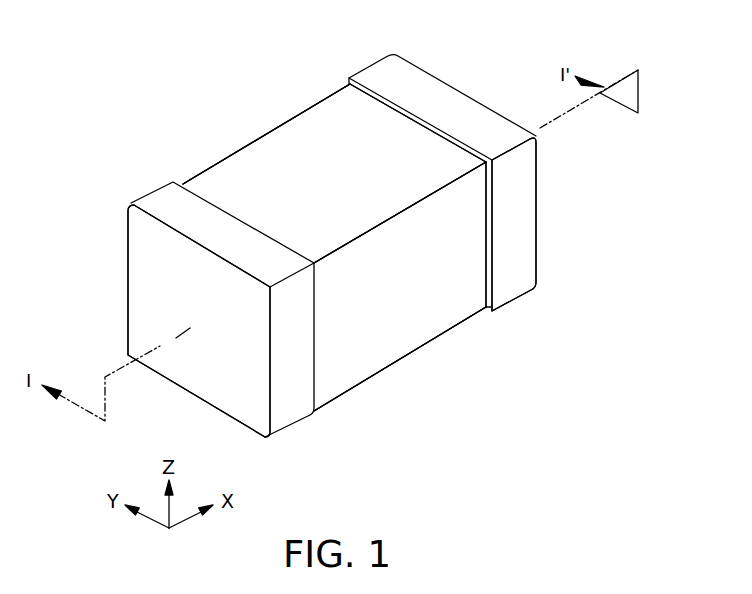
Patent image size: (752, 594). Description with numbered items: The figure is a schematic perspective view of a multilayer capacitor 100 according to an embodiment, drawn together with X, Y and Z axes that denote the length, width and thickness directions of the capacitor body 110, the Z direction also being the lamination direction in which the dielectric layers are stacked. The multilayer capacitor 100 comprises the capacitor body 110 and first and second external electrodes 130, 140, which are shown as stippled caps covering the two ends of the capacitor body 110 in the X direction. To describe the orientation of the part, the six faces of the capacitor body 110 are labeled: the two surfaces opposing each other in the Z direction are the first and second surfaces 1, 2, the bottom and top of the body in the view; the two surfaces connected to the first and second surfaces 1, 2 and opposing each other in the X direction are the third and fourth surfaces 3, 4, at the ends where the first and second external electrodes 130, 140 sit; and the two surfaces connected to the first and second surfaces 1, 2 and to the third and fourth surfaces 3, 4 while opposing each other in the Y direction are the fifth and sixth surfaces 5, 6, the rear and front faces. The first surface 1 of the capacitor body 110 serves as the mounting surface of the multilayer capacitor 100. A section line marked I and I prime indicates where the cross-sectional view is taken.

The multilayer capacitor 100 is at (185, 34).
The capacitor body 110 is at (407, 140).
The first external electrode 130 is at (131, 272).
The second external electrode 140 is at (528, 241).
The first surface 1 is at (333, 358).
The second surface 2 is at (339, 116).
The third surface 3 is at (132, 322).
The fourth surface 4 is at (529, 188).
The fifth surface 5 is at (274, 155).
The sixth surface 6 is at (400, 322).